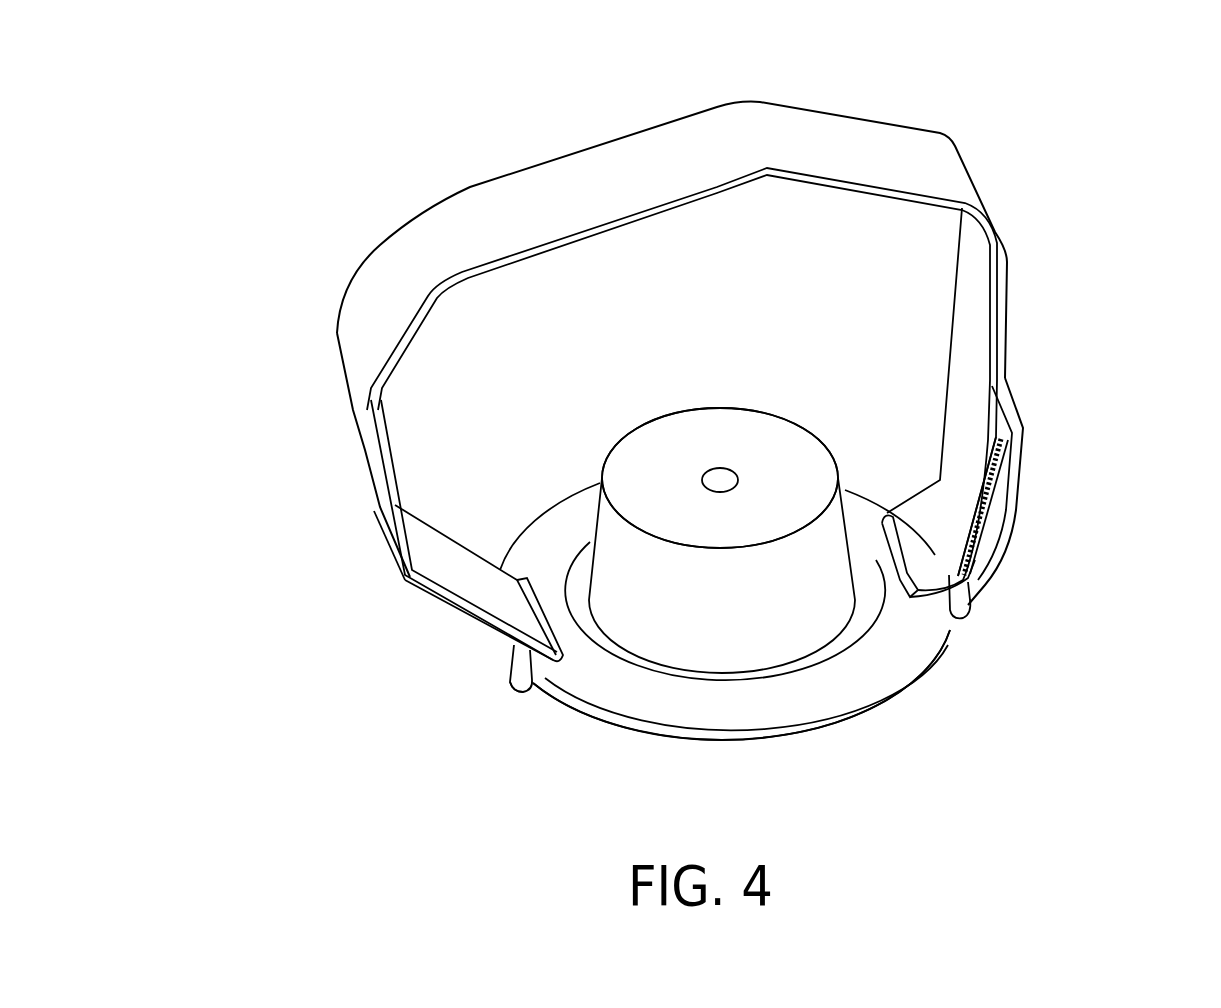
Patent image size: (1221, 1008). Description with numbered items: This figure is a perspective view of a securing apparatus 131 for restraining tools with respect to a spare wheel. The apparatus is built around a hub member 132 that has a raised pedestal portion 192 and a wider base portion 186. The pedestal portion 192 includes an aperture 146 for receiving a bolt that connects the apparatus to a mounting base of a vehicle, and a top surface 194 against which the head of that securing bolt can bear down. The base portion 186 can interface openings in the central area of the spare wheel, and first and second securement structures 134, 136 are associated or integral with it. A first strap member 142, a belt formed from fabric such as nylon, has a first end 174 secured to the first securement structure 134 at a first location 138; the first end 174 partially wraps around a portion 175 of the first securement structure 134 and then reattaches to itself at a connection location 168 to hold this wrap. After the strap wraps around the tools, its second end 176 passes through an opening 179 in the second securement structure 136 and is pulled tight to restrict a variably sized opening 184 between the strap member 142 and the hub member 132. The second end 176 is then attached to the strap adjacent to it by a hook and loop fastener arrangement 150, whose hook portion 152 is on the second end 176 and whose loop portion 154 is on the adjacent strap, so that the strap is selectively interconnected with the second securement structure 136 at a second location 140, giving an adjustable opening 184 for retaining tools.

The securing apparatus 131 is at (337, 155).
The variably sized opening 184 is at (653, 257).
The first strap member 142 is at (337, 445).
The second end 176 is at (1045, 418).
The connection location 168 is at (433, 604).
The first end 174 is at (463, 637).
The portion of the first securement structure 175 is at (520, 652).
The first location 138 is at (517, 695).
The hub member 132 is at (722, 385).
The top surface 194 is at (652, 435).
The aperture 146 is at (738, 472).
The pedestal portion 192 is at (590, 515).
The base portion 186 is at (860, 718).
The first securement structure 134 is at (532, 700).
The second securement structure 136 is at (950, 647).
The second location 140 is at (960, 628).
The hook and loop fastener arrangement 150 is at (1037, 540).
The hook portion 152 is at (1005, 460).
The loop portion 154 is at (993, 507).
The opening 179 is at (890, 537).